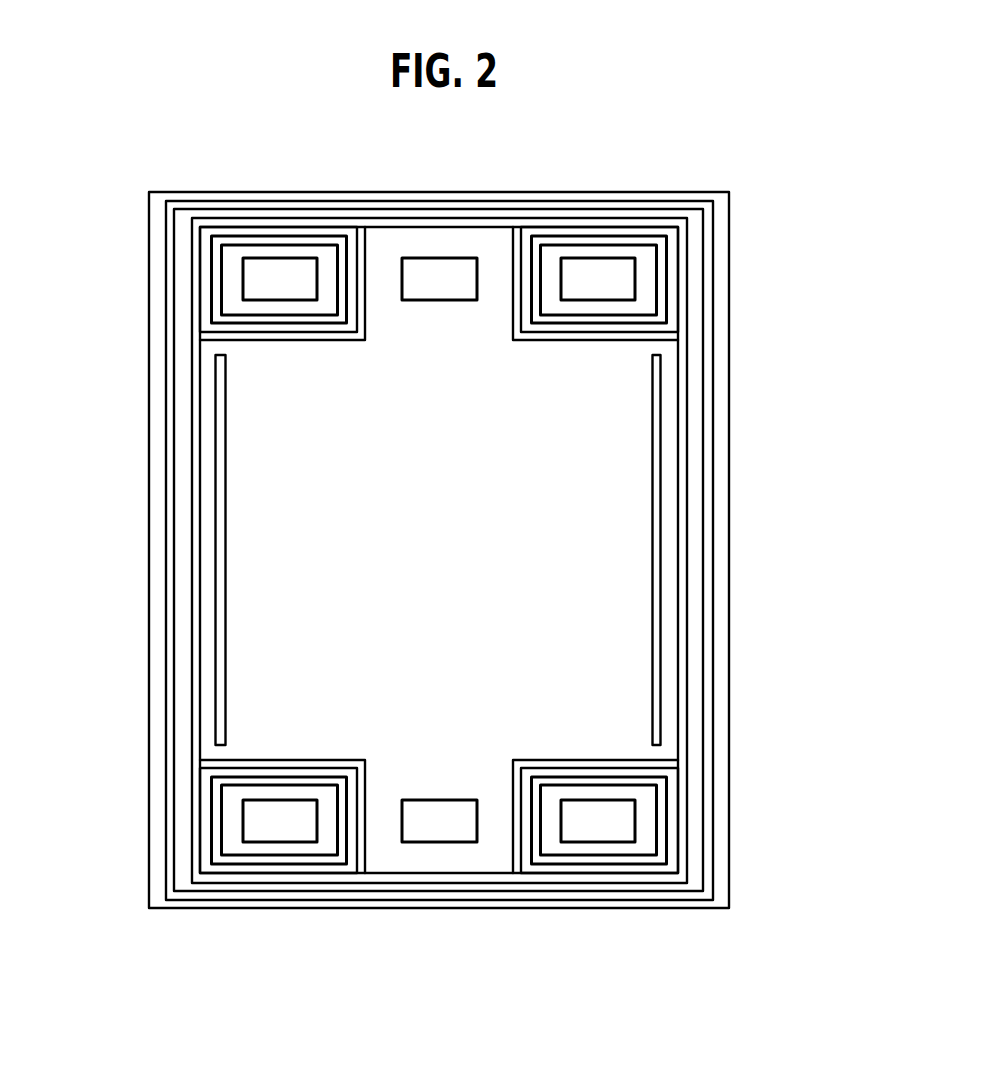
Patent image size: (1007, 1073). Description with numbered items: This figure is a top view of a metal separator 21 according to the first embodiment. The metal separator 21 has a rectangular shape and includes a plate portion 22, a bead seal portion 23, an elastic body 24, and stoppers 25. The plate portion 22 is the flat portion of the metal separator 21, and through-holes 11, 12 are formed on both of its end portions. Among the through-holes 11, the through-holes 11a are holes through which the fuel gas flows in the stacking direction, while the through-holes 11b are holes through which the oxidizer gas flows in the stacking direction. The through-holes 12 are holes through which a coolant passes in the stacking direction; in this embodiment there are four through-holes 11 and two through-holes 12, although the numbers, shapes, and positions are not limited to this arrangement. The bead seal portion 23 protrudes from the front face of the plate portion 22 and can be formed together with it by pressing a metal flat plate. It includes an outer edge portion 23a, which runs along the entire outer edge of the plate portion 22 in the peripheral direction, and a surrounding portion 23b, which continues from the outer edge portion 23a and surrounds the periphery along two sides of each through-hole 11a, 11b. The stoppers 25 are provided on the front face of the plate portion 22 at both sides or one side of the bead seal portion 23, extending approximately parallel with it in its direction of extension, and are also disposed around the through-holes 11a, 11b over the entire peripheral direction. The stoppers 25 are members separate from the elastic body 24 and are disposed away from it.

The through-hole 11 is at (439, 550).
The through-hole for fuel gas 11a is at (297, 258).
The through-hole for oxidizer gas 11b is at (612, 258).
The through-hole for coolant 12 is at (448, 258).
The metal separator 21 is at (766, 219).
The plate portion 22 is at (718, 285).
The bead seal portion 23 is at (682, 252).
The outer edge portion 23a is at (682, 458).
The surrounding portion 23b is at (360, 265).
The elastic body 24 is at (668, 223).
The stopper 25 is at (216, 276).